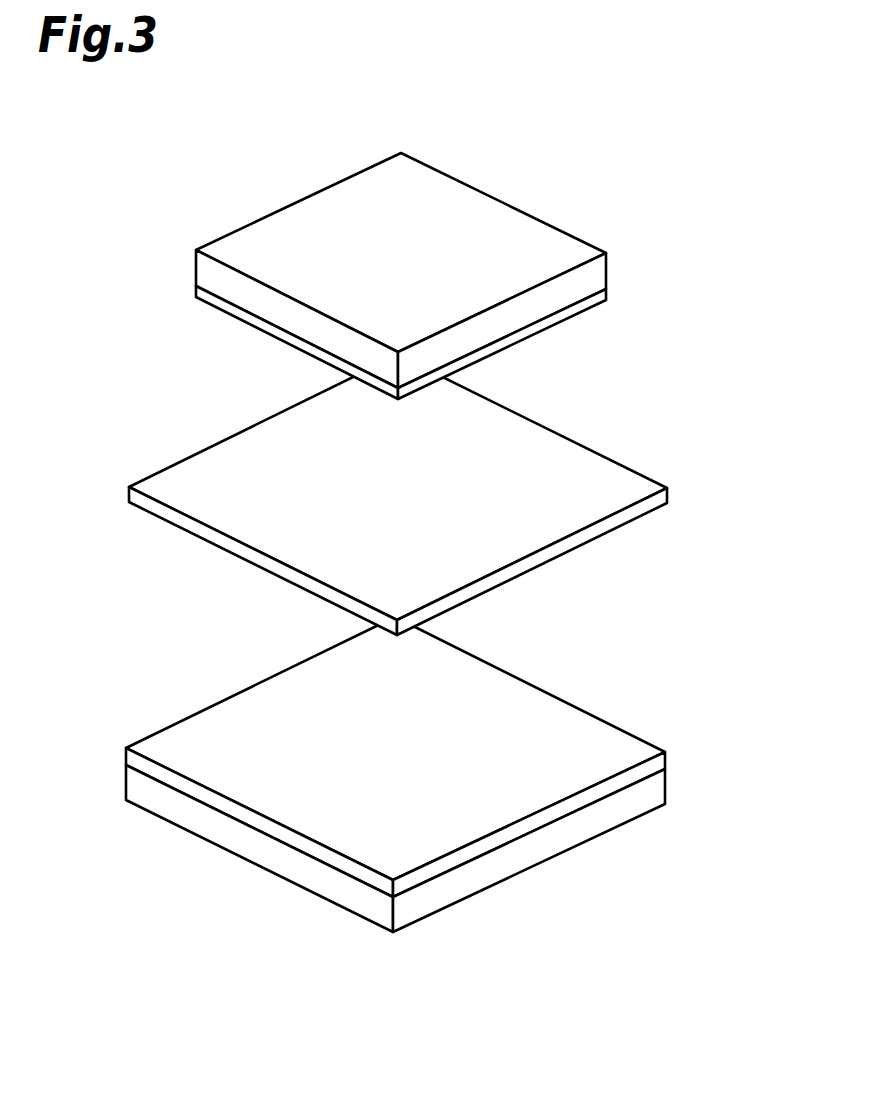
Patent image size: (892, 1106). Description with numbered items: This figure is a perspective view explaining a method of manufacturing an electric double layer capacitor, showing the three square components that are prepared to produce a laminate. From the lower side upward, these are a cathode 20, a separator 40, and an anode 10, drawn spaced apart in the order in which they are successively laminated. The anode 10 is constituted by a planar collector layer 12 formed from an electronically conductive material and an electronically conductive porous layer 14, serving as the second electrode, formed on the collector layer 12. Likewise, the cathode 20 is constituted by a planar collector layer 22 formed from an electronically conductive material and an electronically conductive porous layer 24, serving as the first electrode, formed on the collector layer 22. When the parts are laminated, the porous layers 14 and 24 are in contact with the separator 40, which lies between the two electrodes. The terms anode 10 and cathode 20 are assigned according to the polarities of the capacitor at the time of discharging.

The anode 10 is at (468, 276).
The collector layer 12 is at (608, 268).
The porous layer (second electrode) 14 is at (608, 298).
The separator 40 is at (670, 497).
The cathode 20 is at (473, 774).
The porous layer (first electrode) 24 is at (667, 760).
The collector layer 22 is at (667, 790).